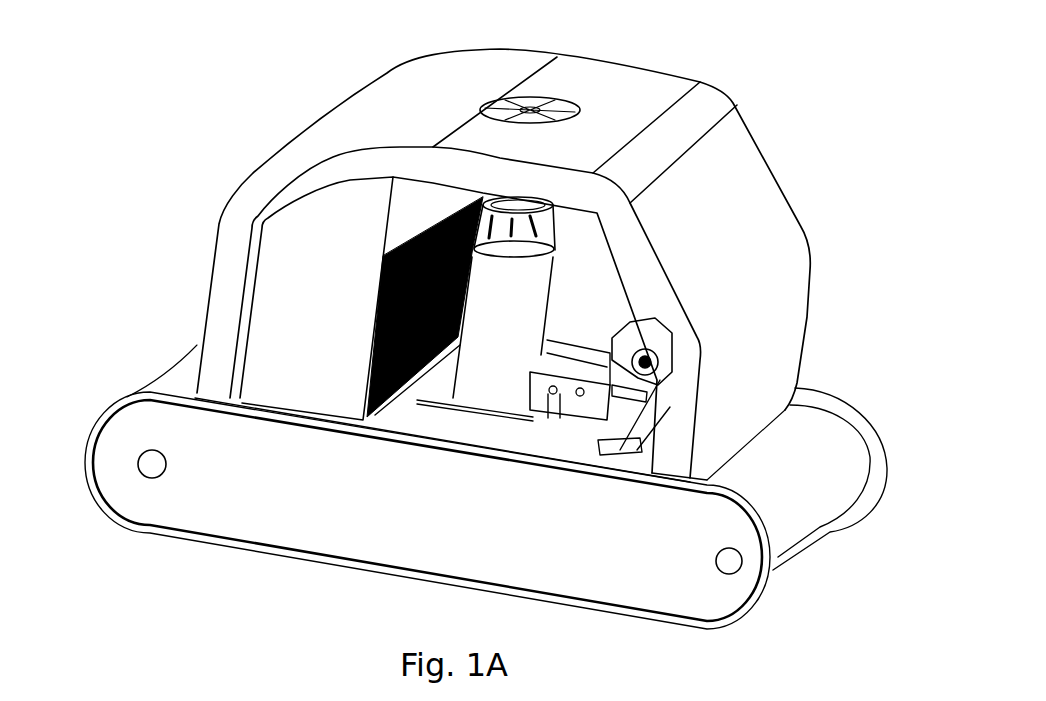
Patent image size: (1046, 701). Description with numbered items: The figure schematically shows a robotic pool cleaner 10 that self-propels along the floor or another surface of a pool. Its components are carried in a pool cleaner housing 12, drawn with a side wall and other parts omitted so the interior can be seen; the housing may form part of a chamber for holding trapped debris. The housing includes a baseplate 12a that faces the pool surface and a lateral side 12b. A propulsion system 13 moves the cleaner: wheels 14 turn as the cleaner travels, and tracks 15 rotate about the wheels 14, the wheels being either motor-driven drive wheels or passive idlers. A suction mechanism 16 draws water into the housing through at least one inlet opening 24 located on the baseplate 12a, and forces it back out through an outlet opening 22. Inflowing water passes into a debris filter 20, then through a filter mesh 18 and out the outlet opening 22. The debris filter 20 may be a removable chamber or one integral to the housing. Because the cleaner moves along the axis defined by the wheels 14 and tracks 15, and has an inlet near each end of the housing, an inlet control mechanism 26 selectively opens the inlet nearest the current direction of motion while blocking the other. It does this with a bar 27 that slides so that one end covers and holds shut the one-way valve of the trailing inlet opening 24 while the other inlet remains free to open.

The robotic pool cleaner 10 is at (268, 77).
The pool cleaner housing 12 is at (757, 180).
The baseplate 12a is at (641, 457).
The lateral side 12b is at (206, 315).
The propulsion system 13 is at (402, 536).
The wheels 14 is at (803, 530).
The tracks 15 is at (232, 535).
The suction mechanism 16 is at (552, 290).
The filter mesh 18 is at (385, 397).
The debris filter 20 is at (278, 312).
The outlet opening 22 is at (533, 113).
The inlet opening 24 is at (648, 413).
The inlet control mechanism 26 is at (510, 435).
The bar 27 is at (537, 418).